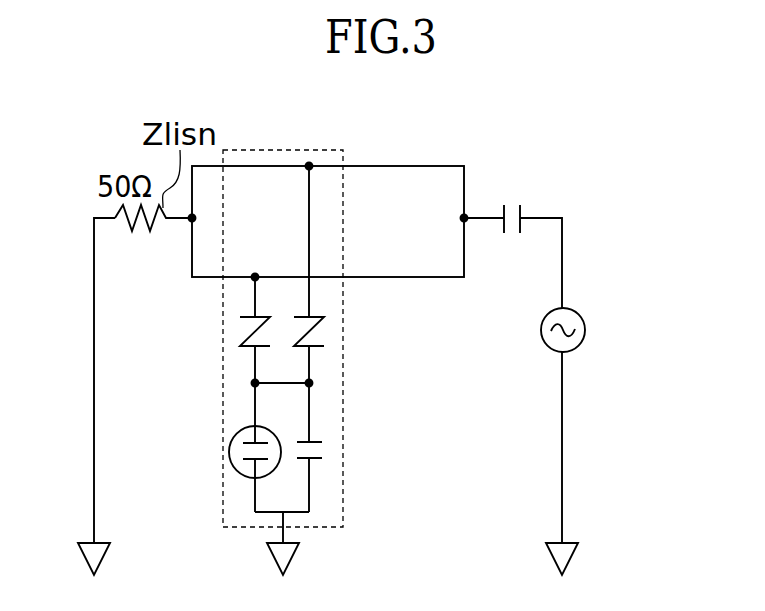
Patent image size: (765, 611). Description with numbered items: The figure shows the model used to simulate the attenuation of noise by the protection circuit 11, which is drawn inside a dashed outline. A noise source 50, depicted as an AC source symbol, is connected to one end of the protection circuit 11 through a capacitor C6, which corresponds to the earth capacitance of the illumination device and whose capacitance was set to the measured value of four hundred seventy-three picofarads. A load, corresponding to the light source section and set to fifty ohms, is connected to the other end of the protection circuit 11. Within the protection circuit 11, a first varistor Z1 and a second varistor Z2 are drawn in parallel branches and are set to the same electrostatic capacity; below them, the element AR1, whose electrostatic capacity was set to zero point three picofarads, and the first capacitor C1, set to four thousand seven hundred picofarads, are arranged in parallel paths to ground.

The protection circuit 11 is at (279, 150).
The noise source 50 is at (585, 331).
The capacitor C6 is at (511, 205).
The first varistor Z1 is at (326, 334).
The second varistor Z2 is at (237, 334).
The element AR1 is at (217, 453).
The first capacitor C1 is at (377, 451).